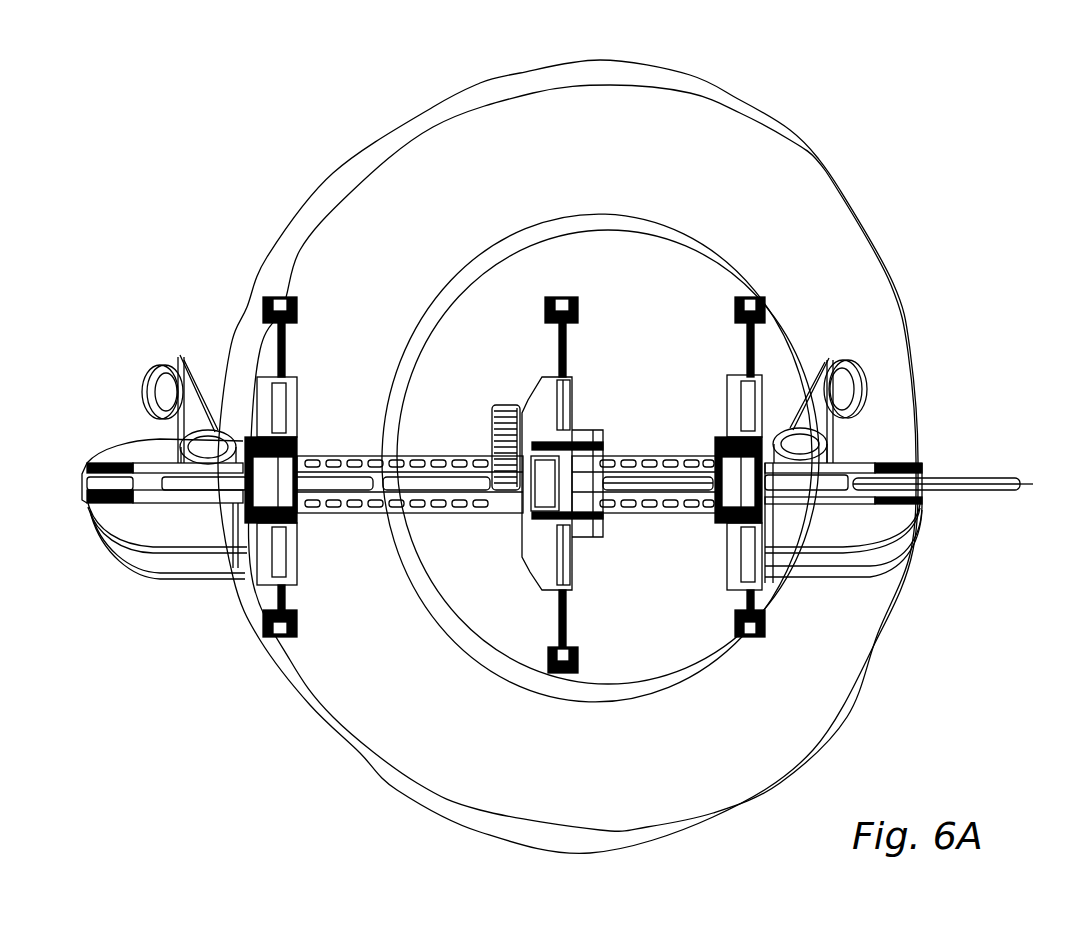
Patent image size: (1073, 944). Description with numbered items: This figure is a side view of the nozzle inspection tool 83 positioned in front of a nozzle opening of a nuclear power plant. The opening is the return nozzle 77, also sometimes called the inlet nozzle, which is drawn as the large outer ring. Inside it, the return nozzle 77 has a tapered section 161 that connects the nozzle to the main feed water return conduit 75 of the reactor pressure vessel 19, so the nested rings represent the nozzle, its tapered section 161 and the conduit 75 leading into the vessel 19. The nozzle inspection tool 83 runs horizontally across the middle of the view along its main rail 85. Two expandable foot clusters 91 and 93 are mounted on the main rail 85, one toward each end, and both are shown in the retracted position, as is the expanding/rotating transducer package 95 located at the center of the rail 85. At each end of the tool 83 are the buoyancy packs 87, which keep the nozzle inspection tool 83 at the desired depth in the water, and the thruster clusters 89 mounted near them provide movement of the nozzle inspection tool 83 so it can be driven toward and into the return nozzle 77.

The reactor pressure vessel 19 is at (262, 159).
The main feed water return conduit 75 is at (663, 327).
The return nozzle 77 is at (793, 136).
The nozzle inspection tool 83 is at (146, 635).
The main rail 85 is at (474, 456).
The buoyancy packs 87 is at (113, 449).
The thruster clusters 89 is at (213, 430).
The expandable foot cluster 91 is at (262, 646).
The expandable foot cluster 93 is at (752, 637).
The expanding/rotating transducer packages 95 is at (558, 684).
The tapered section 161 is at (820, 233).